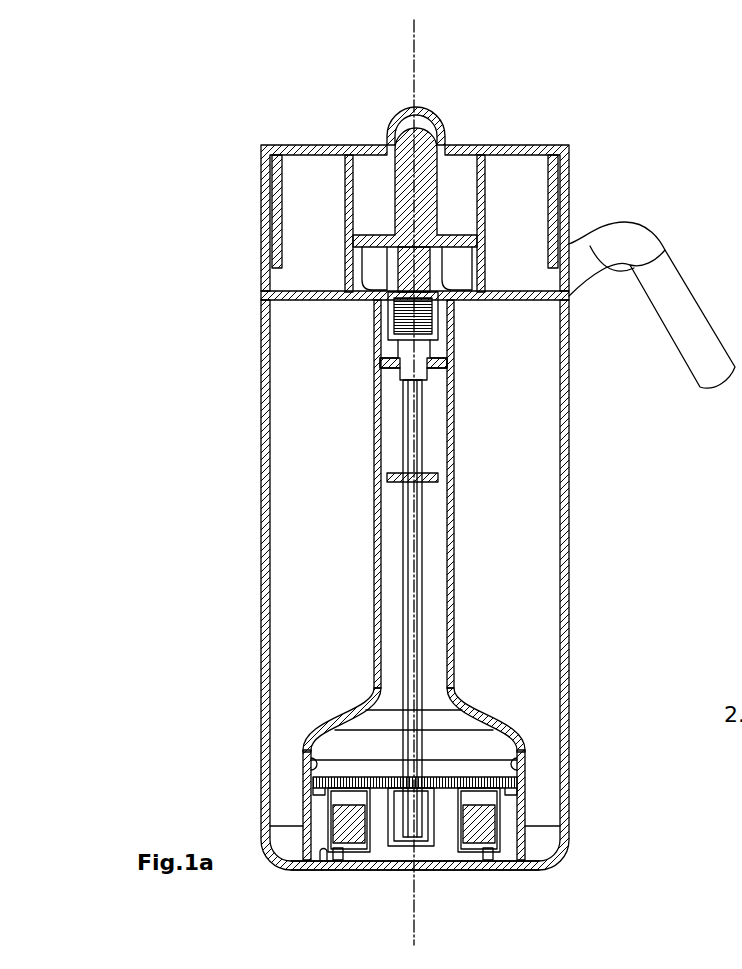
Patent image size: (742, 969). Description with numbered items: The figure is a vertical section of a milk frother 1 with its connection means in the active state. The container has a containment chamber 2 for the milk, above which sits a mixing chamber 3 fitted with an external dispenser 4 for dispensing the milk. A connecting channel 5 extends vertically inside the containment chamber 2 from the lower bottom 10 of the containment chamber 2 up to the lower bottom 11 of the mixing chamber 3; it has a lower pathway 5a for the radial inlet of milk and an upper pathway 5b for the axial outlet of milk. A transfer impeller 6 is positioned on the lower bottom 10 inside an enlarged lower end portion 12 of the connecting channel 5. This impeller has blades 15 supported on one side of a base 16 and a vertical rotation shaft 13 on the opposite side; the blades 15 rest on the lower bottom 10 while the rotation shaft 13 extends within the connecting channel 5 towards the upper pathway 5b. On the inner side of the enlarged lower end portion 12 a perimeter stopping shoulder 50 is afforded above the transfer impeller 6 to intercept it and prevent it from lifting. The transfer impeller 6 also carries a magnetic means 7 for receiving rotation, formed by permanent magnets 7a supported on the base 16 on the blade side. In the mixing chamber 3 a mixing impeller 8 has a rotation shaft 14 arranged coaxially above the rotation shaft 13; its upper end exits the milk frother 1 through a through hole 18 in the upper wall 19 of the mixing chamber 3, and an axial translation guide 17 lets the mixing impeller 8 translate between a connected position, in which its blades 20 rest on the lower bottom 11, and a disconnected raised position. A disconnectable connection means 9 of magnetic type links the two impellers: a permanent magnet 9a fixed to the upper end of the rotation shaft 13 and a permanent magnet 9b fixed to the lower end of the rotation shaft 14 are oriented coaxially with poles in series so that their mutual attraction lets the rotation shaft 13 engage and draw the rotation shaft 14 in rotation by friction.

The milk frother 1 is at (535, 115).
The containment chamber 2 is at (288, 547).
The mixing chamber 3 is at (297, 232).
The external dispenser 4 is at (670, 300).
The connecting channel 5 is at (433, 582).
The lower pathway 5a is at (322, 852).
The upper pathway 5b is at (447, 312).
The transfer impeller 6 is at (480, 767).
The magnetic means 7 is at (472, 830).
The permanent magnets 7a is at (357, 823).
The mixing impeller 8 is at (458, 272).
The disconnectable connection means 9 is at (407, 283).
The permanent magnet 9a is at (420, 323).
The permanent magnet 9b is at (437, 258).
The lower bottom 10 is at (328, 868).
The lower bottom 11 is at (315, 298).
The enlarged lower end portion 12 is at (305, 803).
The rotation shaft 13 is at (410, 658).
The rotation shaft 14 is at (403, 178).
The blades 15 is at (342, 852).
The base 16 is at (358, 780).
The axial translation guide 17 is at (348, 230).
The through hole 18 is at (444, 122).
The upper wall 19 is at (482, 147).
The blades 20 is at (372, 262).
The perimeter stopping shoulder 50 is at (315, 760).